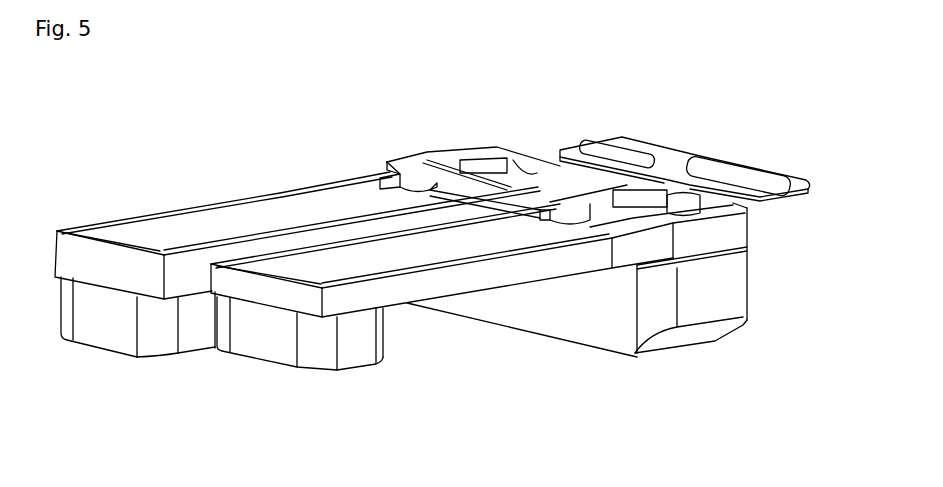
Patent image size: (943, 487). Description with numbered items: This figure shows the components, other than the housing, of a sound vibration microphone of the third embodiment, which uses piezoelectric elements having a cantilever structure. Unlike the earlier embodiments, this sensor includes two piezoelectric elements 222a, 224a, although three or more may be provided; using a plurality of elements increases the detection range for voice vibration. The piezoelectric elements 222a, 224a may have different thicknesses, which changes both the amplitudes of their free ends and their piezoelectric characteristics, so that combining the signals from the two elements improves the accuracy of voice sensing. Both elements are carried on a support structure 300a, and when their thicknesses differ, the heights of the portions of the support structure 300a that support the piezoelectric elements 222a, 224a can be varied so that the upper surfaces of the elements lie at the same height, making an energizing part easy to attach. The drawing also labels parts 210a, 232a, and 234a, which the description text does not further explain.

The end plate 210a is at (717, 308).
The piezoelectric element 222a is at (542, 268).
The piezoelectric element 224a is at (115, 277).
The second support portion 232a is at (272, 347).
The support protrusion 234a is at (166, 348).
The support structure 300a is at (708, 157).